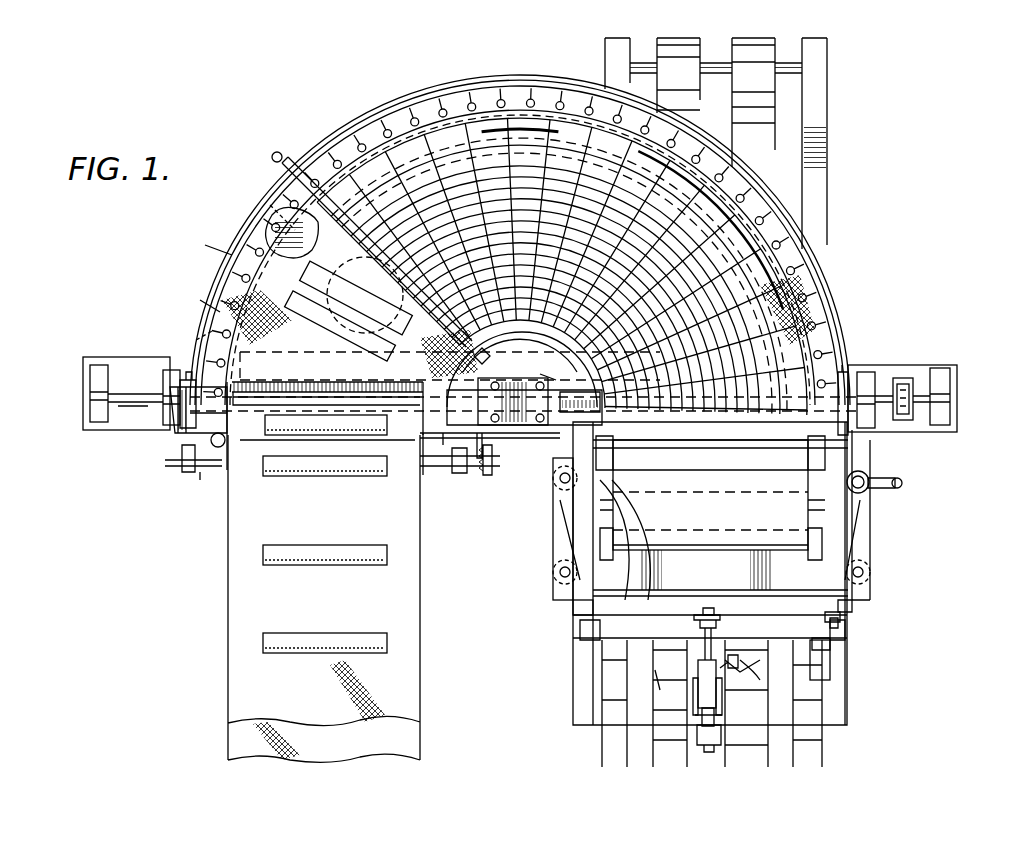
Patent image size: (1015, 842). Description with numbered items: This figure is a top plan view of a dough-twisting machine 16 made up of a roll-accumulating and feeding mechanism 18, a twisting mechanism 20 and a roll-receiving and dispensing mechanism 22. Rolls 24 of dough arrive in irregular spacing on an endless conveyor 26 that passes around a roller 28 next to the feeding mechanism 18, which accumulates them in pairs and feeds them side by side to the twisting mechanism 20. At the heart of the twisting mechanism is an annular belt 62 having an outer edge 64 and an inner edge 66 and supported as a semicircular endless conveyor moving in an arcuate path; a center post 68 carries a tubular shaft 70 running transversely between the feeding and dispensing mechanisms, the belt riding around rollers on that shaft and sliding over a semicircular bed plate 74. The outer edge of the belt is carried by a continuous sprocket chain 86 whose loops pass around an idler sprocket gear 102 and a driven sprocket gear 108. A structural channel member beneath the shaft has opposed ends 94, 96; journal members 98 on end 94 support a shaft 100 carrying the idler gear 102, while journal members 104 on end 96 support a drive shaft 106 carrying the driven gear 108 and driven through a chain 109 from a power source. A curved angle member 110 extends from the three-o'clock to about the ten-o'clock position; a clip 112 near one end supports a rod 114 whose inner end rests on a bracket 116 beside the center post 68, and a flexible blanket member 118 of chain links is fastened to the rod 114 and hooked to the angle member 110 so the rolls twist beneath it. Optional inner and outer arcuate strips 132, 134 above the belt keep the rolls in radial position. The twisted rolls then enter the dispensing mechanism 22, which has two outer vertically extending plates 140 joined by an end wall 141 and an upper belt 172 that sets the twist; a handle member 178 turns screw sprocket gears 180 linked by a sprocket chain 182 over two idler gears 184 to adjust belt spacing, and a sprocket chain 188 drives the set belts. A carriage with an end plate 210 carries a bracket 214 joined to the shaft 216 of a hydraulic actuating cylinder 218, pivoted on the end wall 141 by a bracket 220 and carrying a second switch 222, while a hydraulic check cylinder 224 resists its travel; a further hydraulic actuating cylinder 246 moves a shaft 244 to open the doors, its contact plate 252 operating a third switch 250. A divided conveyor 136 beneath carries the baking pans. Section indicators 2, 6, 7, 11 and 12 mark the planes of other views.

The section line 2- 2 is at (168, 334).
The section line 6- 6 is at (432, 258).
The section line 7- 7 is at (522, 50).
The section line 11- 11 is at (893, 322).
The section line 12- 12 is at (848, 302).
The dough-twisting machine 16 is at (855, 208).
The roll-accumulating and feeding mechanism 18 is at (176, 432).
The twisting mechanism 20 is at (528, 251).
The roll-receiving and dispensing mechanism 22 is at (730, 595).
The rolls 24 is at (312, 470).
The endless conveyor 26 is at (248, 553).
The roller 28 is at (222, 470).
The annular belt 62 is at (218, 305).
The outer edge 64 is at (262, 224).
The inner edge 66 is at (562, 350).
The center post 68 is at (512, 425).
The tubular shaft 70 is at (580, 400).
The bed plate 74 is at (275, 215).
The sprocket chain 86 is at (222, 251).
The end of structural channel member 94 is at (121, 374).
The end of structural channel member 96 is at (921, 400).
The journal members 98 is at (98, 384).
The shaft 100 is at (135, 385).
The idler sprocket gear 102 is at (210, 345).
The journal members 104 is at (870, 395).
The drive shaft 106 is at (908, 422).
The driven sprocket gear 108 is at (850, 375).
The chain 109 is at (896, 424).
The curved angle member 110 is at (448, 94).
The clip 112 is at (300, 160).
The rod 114 is at (272, 152).
The bracket 116 is at (522, 369).
The blanket member 118 is at (540, 185).
The inner arcuate strip 132 is at (552, 369).
The outer arcuate strip 134 is at (775, 272).
The divided conveyor 136 is at (758, 120).
The vertically extending plates 140 is at (572, 606).
The end wall 141 is at (588, 724).
The upper belt 172 is at (710, 513).
The handle member 178 is at (906, 485).
The sprocket gears 180 is at (558, 480).
The sprocket chain 182 is at (672, 508).
The idler gears 184 is at (556, 508).
The sprocket chain 188 is at (884, 470).
The end plate 210 is at (832, 640).
The bracket 214 is at (716, 630).
The shaft 216 is at (702, 642).
The hydraulic actuating cylinder 218 is at (710, 688).
The bracket 220 is at (716, 713).
The second switch 222 is at (740, 658).
The hydraulic check cylinder 224 is at (707, 748).
The shaft 244 is at (840, 613).
The hydraulic actuating cylinder 246 is at (832, 657).
The third switch 250 is at (838, 622).
The contact plate 252 is at (855, 604).